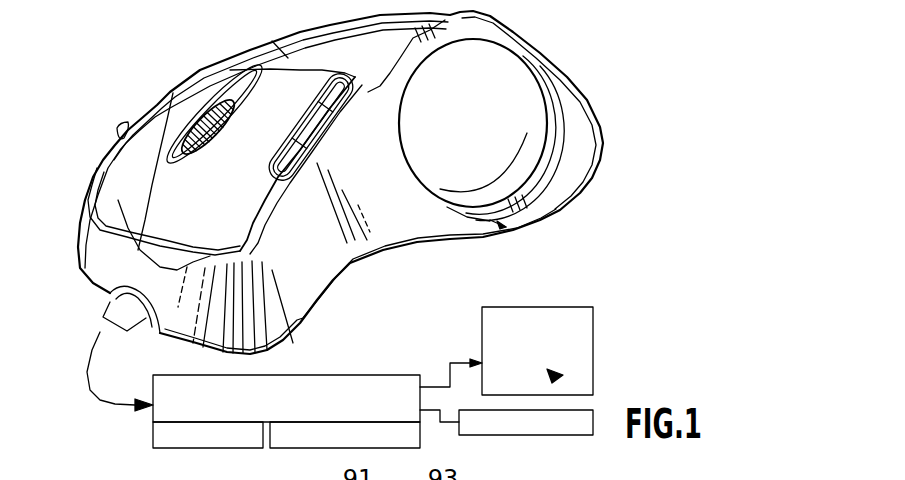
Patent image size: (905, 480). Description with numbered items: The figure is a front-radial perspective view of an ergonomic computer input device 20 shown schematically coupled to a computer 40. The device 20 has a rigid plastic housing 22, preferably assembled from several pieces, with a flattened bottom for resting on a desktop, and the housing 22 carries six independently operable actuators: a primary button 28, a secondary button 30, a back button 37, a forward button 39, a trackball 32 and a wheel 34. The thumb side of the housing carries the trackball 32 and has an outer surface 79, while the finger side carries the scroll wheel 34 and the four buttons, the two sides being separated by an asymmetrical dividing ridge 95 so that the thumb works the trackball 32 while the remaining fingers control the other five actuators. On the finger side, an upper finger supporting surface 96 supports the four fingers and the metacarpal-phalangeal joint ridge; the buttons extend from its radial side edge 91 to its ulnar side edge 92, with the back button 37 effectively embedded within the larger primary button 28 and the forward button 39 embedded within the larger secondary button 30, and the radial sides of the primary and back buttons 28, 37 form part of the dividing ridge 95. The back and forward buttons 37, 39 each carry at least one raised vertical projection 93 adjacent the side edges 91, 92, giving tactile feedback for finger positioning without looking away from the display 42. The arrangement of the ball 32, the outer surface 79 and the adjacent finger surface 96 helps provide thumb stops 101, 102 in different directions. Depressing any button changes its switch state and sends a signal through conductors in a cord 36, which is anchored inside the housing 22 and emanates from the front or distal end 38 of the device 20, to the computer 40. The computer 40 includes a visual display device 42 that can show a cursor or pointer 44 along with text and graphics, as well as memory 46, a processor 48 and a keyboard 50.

The ergonomic computer input device 20 is at (396, 182).
The housing 22 is at (266, 136).
The primary button 28 is at (211, 317).
The secondary button 30 is at (186, 169).
The trackball 32 is at (504, 135).
The wheel 34 is at (207, 113).
The cord 36 is at (96, 309).
The front or distal end 38 is at (80, 332).
The forward button 39 is at (94, 108).
The computer 40 is at (317, 377).
The visual display device 42 is at (563, 337).
The cursor or pointer 44 is at (595, 368).
The memory 46 is at (174, 440).
The processor 48 is at (306, 451).
The keyboard 50 is at (536, 444).
The outer surface 79 is at (360, 279).
The radial side edge 91 is at (305, 169).
The ulnar side edge 92 is at (138, 186).
The raised vertical projection 93 is at (329, 127).
The dividing ridge 95 is at (429, 120).
The finger supporting surface 96 is at (273, 41).
The thumb stop 101 is at (505, 104).
The thumb stop 102 is at (515, 164).
The back button 37 is at (325, 129).